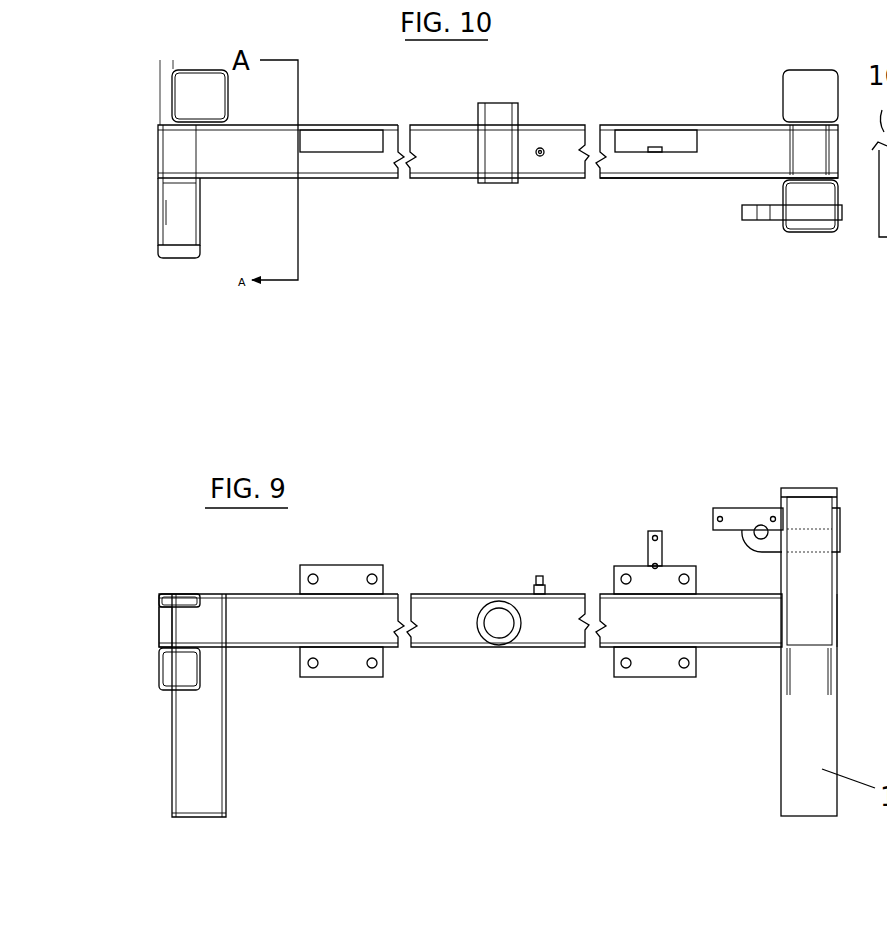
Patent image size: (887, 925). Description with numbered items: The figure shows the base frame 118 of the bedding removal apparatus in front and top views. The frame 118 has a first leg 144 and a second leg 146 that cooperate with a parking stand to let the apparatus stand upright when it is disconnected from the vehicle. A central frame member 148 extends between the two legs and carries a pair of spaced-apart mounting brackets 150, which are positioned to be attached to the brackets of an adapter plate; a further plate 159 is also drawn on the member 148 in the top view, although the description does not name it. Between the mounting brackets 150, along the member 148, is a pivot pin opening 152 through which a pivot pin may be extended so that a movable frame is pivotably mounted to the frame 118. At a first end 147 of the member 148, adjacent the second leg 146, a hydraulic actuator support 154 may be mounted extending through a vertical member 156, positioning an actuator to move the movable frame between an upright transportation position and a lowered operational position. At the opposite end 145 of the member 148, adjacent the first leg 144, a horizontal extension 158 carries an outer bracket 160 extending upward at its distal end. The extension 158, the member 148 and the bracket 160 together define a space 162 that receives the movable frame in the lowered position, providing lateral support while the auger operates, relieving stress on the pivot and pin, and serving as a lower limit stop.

In FIG. 10, the frame 118 is at (675, 194).
In FIG. 10, the first leg 144 is at (175, 80).
In FIG. 9, the first leg 144 is at (192, 772).
In FIG. 9, the opposite end 145 is at (160, 625).
In FIG. 10, the second leg 146 is at (790, 72).
In FIG. 9, the first end 147 is at (838, 625).
In FIG. 10, the central frame member 148 is at (328, 178).
In FIG. 9, the central frame member 148 is at (450, 636).
In FIG. 10, the mounting brackets 150 is at (348, 128).
In FIG. 9, the mounting brackets 150 is at (345, 578).
In FIG. 10, the pivot pin opening 152 is at (500, 183).
In FIG. 9, the pivot pin opening 152 is at (502, 626).
In FIG. 10, the hydraulic actuator support 154 is at (750, 219).
In FIG. 9, the hydraulic actuator support 154 is at (760, 520).
In FIG. 10, the vertical member 156 is at (800, 233).
In FIG. 9, the vertical member 156 is at (823, 500).
In FIG. 10, the horizontal extension 158 is at (200, 228).
In FIG. 9, the horizontal extension 158 is at (160, 678).
In FIG. 10, the plate 159 is at (652, 126).
In FIG. 10, the outer bracket 160 is at (172, 258).
In FIG. 9, the outer bracket 160 is at (170, 608).
In FIG. 10, the space 162 is at (172, 212).